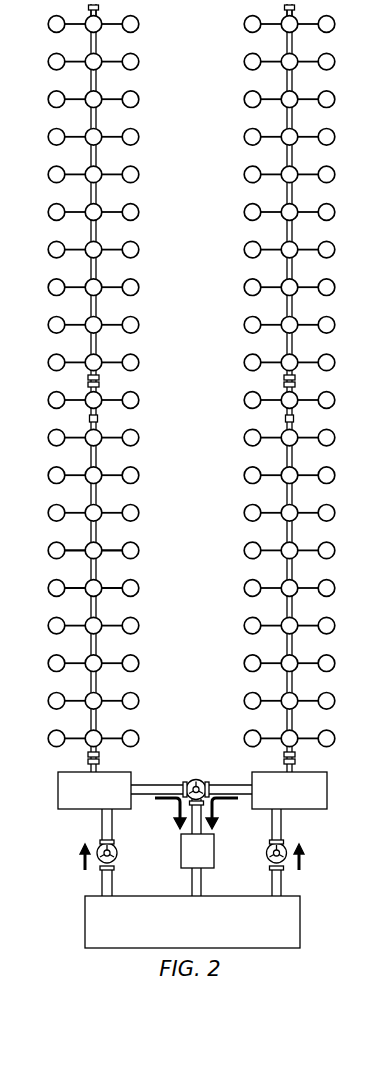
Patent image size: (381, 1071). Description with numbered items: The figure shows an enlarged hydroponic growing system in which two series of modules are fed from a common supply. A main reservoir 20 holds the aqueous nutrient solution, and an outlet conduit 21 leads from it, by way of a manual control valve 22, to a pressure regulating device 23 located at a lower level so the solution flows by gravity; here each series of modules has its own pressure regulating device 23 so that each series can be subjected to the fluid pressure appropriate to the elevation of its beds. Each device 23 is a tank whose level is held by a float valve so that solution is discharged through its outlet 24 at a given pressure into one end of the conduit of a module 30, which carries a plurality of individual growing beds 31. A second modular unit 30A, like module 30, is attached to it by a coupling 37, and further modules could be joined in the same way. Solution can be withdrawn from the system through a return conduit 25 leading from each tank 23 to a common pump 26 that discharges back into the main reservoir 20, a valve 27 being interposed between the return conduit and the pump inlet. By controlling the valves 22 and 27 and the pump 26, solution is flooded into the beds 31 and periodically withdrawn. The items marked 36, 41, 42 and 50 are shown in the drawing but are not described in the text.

The main reservoir 20 is at (192, 922).
The outlet conduit 21 is at (281, 885).
The manual control valve 22 is at (117, 853).
The pressure regulating device 23 is at (192, 790).
The outlet 24 is at (90, 768).
The return conduit 25 is at (102, 823).
The pump 26 is at (197, 847).
The valve 27 is at (196, 779).
The module 30 is at (287, 612).
The second modular unit 30A is at (96, 157).
The growing beds 31 is at (243, 473).
The cap 36 is at (97, 6).
The coupling 37 is at (283, 381).
The left branch 41 is at (74, 553).
The right branch 42 is at (113, 553).
The vent 50 is at (89, 10).